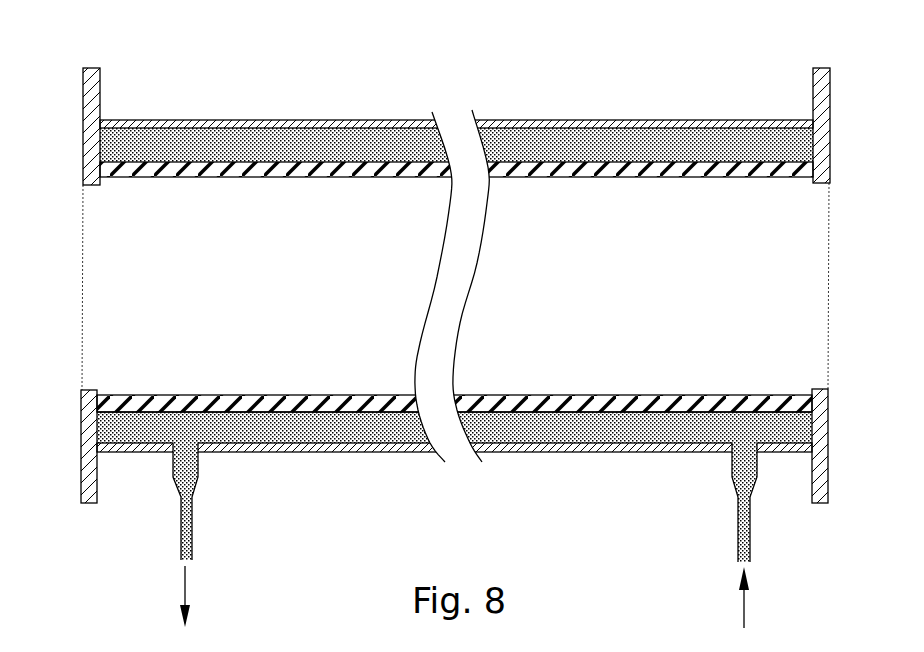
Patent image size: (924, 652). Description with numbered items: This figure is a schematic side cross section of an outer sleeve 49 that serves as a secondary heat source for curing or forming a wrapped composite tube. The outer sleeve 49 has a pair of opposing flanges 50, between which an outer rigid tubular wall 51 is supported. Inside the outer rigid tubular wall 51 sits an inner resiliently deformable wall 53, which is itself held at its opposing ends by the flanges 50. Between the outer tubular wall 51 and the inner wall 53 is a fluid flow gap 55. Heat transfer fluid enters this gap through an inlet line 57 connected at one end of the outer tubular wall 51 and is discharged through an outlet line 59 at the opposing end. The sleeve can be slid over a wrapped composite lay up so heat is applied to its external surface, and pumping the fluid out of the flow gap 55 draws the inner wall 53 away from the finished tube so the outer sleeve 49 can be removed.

The outer sleeve 49 is at (456, 152).
The flanges 50 is at (85, 89).
The outer rigid tubular wall 51 is at (340, 120).
The inner resiliently deformable wall 53 is at (608, 178).
The fluid flow gap 55 is at (647, 147).
The inlet line 57 is at (732, 462).
The outlet line 59 is at (207, 462).